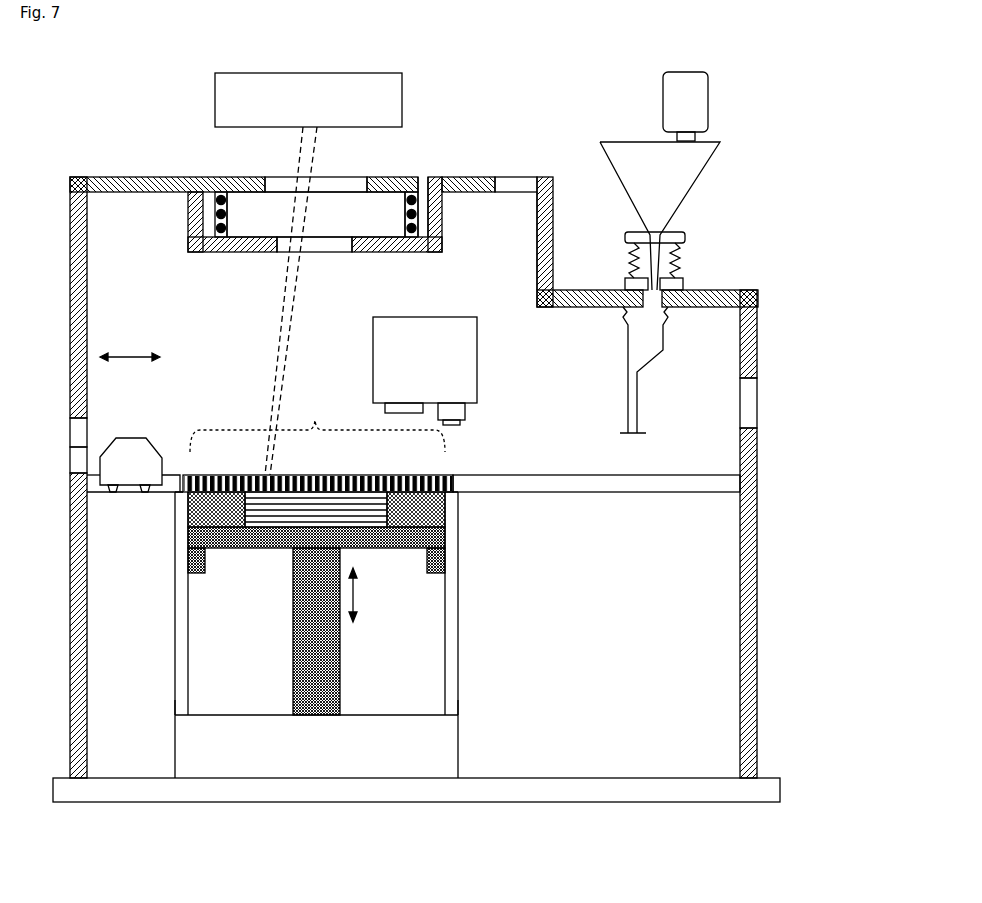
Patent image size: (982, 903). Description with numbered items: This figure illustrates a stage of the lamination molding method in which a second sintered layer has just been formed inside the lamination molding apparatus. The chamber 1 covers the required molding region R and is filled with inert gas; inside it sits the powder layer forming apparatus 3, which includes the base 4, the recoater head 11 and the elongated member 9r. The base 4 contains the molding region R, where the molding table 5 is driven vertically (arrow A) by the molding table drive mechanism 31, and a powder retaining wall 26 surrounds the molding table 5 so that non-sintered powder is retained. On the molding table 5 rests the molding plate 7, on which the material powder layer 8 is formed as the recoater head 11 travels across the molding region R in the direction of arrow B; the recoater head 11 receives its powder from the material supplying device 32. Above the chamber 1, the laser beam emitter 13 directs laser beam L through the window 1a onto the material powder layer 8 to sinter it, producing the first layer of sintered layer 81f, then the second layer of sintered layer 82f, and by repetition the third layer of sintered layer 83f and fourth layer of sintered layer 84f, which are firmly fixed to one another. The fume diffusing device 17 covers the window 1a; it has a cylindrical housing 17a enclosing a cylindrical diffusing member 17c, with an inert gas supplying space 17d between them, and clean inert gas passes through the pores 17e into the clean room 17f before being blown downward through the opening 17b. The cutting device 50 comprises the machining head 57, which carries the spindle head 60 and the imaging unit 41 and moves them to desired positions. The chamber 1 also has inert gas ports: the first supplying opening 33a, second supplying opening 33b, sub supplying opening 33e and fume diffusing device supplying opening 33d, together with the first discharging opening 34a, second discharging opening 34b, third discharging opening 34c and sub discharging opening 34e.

The chamber 1 is at (82, 177).
The window 1a is at (268, 177).
The powder layer forming apparatus 3 is at (508, 451).
The base 4 is at (681, 484).
The molding table 5 is at (445, 566).
The molding plate 7 is at (360, 548).
The material powder layer 8 is at (458, 494).
The elongated member 9r is at (400, 475).
The recoater head 11 is at (136, 438).
The laser beam emitter 13 is at (343, 73).
The fume diffusing device 17 is at (321, 233).
The cylindrical housing 17a is at (442, 209).
The opening 17b is at (338, 252).
The cylindrical diffusing member 17c is at (405, 223).
The inert gas supplying space 17d is at (435, 252).
The pores 17e is at (215, 223).
The clean room 17f is at (316, 214).
The powder retaining wall 26 is at (181, 644).
The molding table drive mechanism 31 is at (345, 700).
The material supplying device 32 is at (683, 190).
The first supplying opening 33a is at (164, 458).
The second supplying opening 33b is at (72, 459).
The fume diffusing device supplying opening 33d is at (421, 178).
The sub supplying opening 33e is at (72, 427).
The first discharging opening 34a is at (740, 423).
The second discharging opening 34b is at (102, 456).
The third discharging opening 34c is at (318, 470).
The sub discharging opening 34e is at (535, 186).
The imaging unit 41 is at (465, 411).
The cutting device 50 is at (455, 371).
The machining head 57 is at (477, 346).
The spindle head 60 is at (397, 403).
The first layer of sintered layer 81f is at (455, 542).
The second layer of sintered layer 82f is at (188, 543).
The third layer of sintered layer 83f is at (450, 516).
The fourth layer of sintered layer 84f is at (188, 501).
The vertical direction arrow A is at (360, 595).
The recoater head moving direction arrow B is at (130, 349).
The laser beam L is at (290, 301).
The molding region R is at (317, 426).